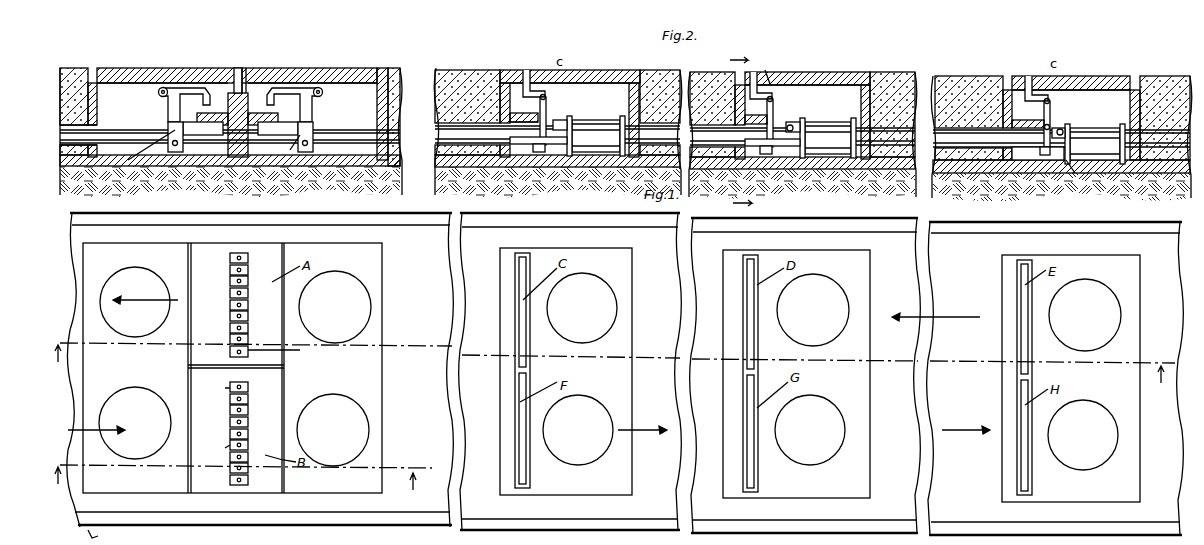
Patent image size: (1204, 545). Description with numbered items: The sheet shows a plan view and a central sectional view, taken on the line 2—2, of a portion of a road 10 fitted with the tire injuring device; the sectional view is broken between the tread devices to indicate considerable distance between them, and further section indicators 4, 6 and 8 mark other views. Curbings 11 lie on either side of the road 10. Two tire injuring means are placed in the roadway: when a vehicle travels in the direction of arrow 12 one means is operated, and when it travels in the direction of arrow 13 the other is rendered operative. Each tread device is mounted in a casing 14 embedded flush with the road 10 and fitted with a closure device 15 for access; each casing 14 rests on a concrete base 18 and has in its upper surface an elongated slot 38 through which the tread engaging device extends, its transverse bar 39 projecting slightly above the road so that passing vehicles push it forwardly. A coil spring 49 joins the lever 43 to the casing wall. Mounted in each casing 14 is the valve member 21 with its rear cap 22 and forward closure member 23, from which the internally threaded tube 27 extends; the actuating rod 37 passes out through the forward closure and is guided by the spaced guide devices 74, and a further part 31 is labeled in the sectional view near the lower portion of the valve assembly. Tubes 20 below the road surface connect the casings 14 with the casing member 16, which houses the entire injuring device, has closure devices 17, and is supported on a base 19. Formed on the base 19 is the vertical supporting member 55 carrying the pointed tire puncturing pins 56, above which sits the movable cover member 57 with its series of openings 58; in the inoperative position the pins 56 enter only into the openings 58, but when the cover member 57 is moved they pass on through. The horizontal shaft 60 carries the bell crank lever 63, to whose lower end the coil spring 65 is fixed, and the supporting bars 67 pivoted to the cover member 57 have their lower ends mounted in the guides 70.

In FIG. 1, the section line 2— 2 is at (614, 354).
In FIG. 1, the section line 4— 4 is at (242, 468).
In FIG. 2, the section indicator 6 is at (747, 125).
In FIG. 2, the section indicator 8 is at (774, 69).
In FIG. 2, the highway or road 10 is at (418, 68).
In FIG. 1, the highway or road 10 is at (533, 375).
In FIG. 1, the curbings 11 is at (408, 218).
In FIG. 1, the arrow 12 is at (155, 302).
In FIG. 1, the arrow 13 is at (88, 427).
In FIG. 2, the casing 14 is at (585, 82).
In FIG. 1, the casing 14 is at (820, 375).
In FIG. 1, the closure device 15 is at (832, 371).
In FIG. 2, the casing member 16 is at (335, 68).
In FIG. 1, the casing member 16 is at (232, 368).
In FIG. 1, the closure devices 17 is at (235, 366).
In FIG. 2, the base 18 is at (560, 166).
In FIG. 2, the base 19 is at (170, 168).
In FIG. 2, the tubes 20 is at (92, 125).
In FIG. 2, the valve member 21 is at (590, 121).
In FIG. 2, the cap or end member 22 is at (1120, 180).
In FIG. 2, the forward closure member 23 is at (1080, 176).
In FIG. 2, the tube 27 is at (1062, 130).
In FIG. 2, the bar 31 is at (522, 160).
In FIG. 2, the actuating rod 37 is at (112, 141).
In FIG. 2, the elongated slot or opening 38 is at (528, 68).
In FIG. 1, the transverse bar 39 is at (521, 317).
In FIG. 2, the lever 43 is at (548, 110).
In FIG. 2, the coil spring 49 is at (530, 113).
In FIG. 2, the vertical supporting member 55 is at (232, 160).
In FIG. 2, the pointed or tire puncturing pins 56 is at (248, 86).
In FIG. 1, the pointed or tire puncturing pins 56 is at (248, 314).
In FIG. 2, the movable cover member 57 is at (215, 88).
In FIG. 1, the movable cover member 57 is at (236, 368).
In FIG. 2, the openings 58 is at (262, 60).
In FIG. 1, the openings 58 is at (300, 350).
In FIG. 2, the horizontal shaft 60 is at (165, 82).
In FIG. 2, the bell crank lever 63 is at (158, 92).
In FIG. 2, the coil spring 65 is at (238, 68).
In FIG. 2, the supporting bars 67 is at (118, 168).
In FIG. 2, the guides 70 is at (176, 155).
In FIG. 2, the guide devices 74 is at (295, 168).